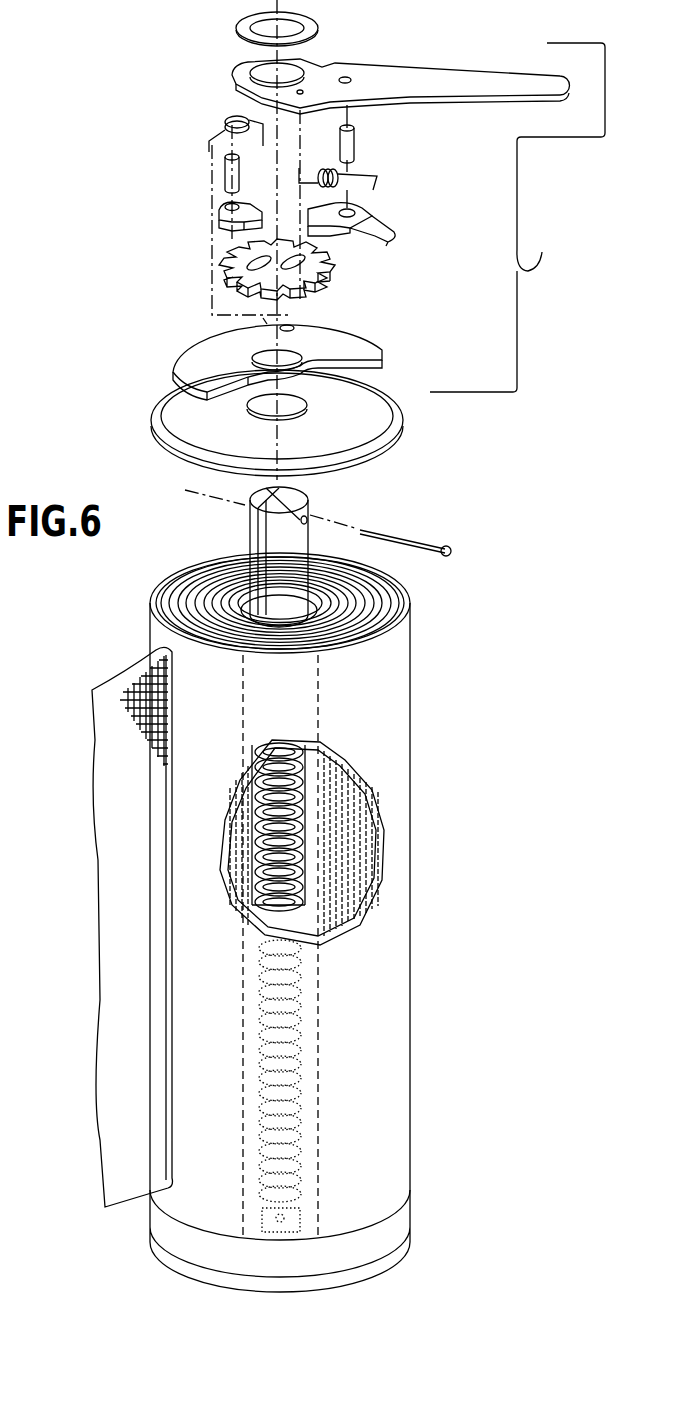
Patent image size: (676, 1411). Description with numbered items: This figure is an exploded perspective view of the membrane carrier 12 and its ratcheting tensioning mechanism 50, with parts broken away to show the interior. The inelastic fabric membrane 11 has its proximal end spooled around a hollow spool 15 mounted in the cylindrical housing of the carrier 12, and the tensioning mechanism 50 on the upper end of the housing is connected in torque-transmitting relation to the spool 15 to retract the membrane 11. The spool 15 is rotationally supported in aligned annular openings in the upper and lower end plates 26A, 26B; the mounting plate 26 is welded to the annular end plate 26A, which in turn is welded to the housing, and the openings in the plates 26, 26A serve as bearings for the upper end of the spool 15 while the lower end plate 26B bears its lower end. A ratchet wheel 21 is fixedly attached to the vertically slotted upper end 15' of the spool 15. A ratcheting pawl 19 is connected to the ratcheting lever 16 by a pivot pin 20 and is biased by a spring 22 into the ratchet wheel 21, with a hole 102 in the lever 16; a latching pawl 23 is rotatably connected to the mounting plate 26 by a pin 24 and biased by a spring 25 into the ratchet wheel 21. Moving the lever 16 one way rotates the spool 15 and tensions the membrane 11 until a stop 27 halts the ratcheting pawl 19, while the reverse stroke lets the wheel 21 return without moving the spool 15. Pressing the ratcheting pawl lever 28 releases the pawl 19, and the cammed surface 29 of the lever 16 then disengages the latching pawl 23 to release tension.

The inelastic fabric membrane 11 is at (128, 905).
The membrane carrier 12 is at (380, 1152).
The spool 15 is at (311, 557).
The shaft slot 15' is at (305, 501).
The ratcheting lever 16 is at (468, 78).
The ratcheting pawl 19 is at (330, 228).
The pivot pin 20 is at (356, 143).
The ratchet wheel 21 is at (320, 280).
The spring 22 is at (372, 176).
The latching pawl 23 is at (222, 224).
The pin 24 is at (222, 176).
The spring 25 is at (232, 120).
The mounting plate 26 is at (200, 357).
The upper annular end plate 26A is at (178, 407).
The lower end plate 26B is at (215, 1285).
The stop 27 is at (262, 411).
The ratcheting pawl lever 28 is at (375, 231).
The cammed surface 29 is at (245, 62).
The tensioning mechanism 50 is at (517, 217).
The mounting hole 102 is at (335, 62).